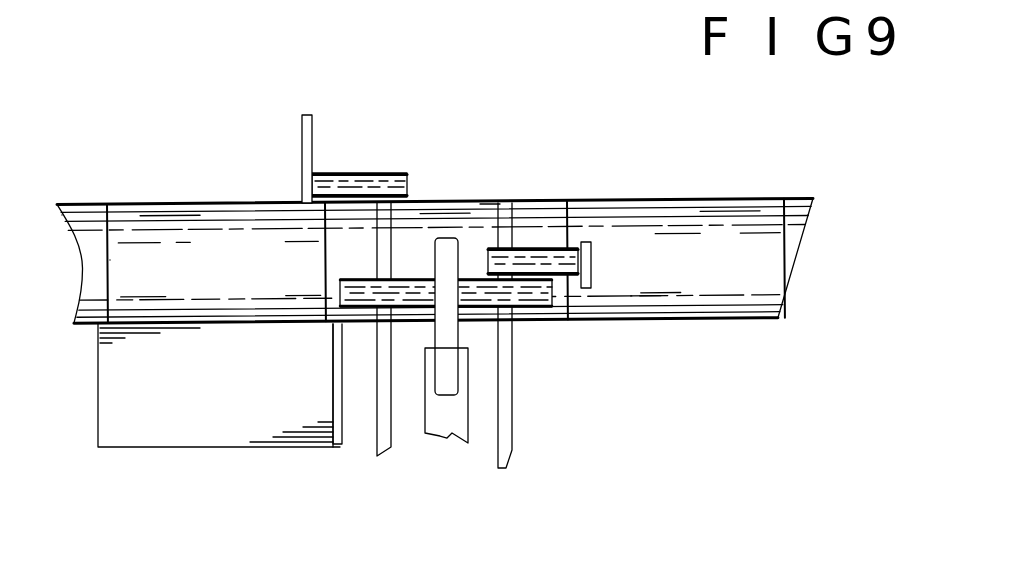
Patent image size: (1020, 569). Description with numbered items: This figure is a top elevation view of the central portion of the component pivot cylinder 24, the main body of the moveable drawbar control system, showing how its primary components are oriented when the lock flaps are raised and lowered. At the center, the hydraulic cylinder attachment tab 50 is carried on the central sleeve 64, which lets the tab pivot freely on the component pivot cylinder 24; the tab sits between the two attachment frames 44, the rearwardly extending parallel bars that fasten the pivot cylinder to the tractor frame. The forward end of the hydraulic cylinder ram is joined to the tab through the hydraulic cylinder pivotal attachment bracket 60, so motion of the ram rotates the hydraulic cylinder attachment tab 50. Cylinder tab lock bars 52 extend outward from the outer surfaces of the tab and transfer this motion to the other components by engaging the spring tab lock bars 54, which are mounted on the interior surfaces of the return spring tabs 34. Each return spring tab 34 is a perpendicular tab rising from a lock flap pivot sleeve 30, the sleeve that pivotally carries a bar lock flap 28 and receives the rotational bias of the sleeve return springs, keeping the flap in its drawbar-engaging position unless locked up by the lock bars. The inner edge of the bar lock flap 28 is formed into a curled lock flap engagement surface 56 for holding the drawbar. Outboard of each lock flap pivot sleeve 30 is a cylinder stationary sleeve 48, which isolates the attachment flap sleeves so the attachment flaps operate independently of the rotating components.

The component pivot cylinder 24 is at (733, 185).
The bar lock flap 28 is at (193, 418).
The lock flap pivot sleeve 30 is at (217, 213).
The return spring tab 34 is at (298, 115).
The attachment frame 44 is at (385, 453).
The cylinder stationary sleeve 48 is at (92, 225).
The hydraulic cylinder attachment tab 50 is at (447, 253).
The cylinder tab lock bar 52 is at (382, 302).
The spring tab lock bar 54 is at (362, 172).
The lock flap engagement surface 56 is at (340, 445).
The hydraulic cylinder pivotal attachment bracket 60 is at (448, 438).
The central sleeve 64 is at (490, 200).